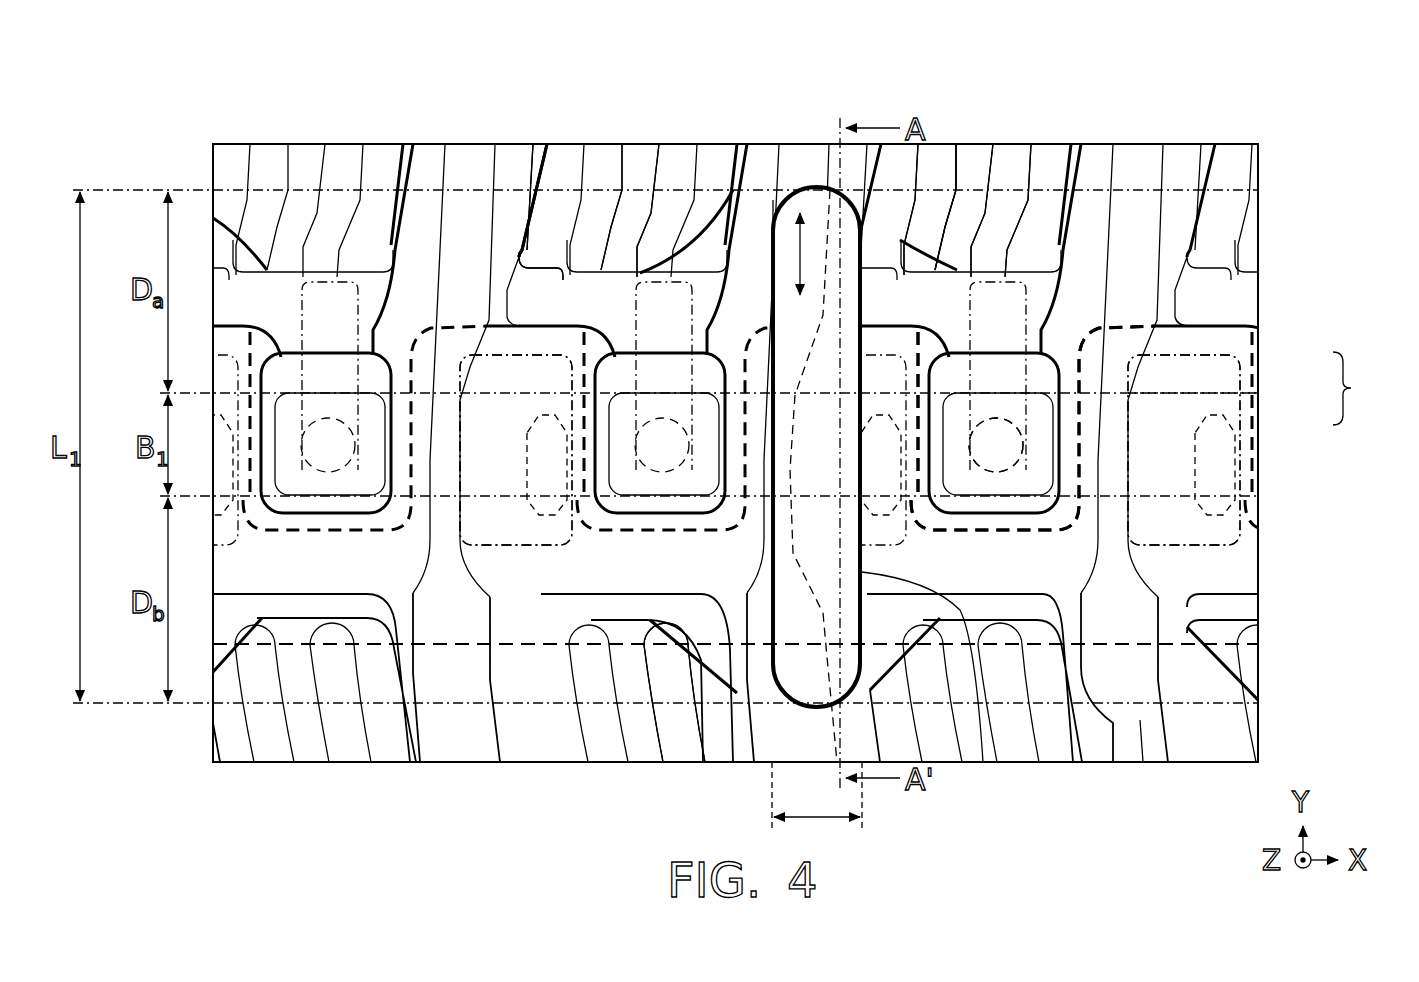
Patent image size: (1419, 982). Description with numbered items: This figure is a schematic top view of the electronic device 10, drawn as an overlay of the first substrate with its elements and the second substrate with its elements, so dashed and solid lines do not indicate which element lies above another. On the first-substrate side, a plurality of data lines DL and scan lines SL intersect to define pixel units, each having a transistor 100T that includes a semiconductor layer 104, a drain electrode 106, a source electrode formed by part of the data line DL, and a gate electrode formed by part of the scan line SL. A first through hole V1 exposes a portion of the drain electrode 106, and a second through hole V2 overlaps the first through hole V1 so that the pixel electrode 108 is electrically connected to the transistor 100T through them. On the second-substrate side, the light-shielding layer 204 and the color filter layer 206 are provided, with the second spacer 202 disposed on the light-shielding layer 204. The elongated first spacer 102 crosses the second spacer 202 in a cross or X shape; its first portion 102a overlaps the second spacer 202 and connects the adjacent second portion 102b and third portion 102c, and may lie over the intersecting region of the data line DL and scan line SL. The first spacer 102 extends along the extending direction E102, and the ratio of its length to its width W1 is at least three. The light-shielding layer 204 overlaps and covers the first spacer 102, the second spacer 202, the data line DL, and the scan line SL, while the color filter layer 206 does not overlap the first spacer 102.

The electronic device 10 is at (101, 64).
The first spacer 102 is at (827, 170).
The first portion 102a is at (970, 168).
The second portion 102b is at (815, 200).
The third portion 102c is at (978, 762).
The semiconductor layer 104 is at (1240, 372).
The drain electrode 106 is at (1240, 414).
The pixel electrode 108 is at (1048, 167).
The transistor 100T is at (1376, 388).
The second spacer 202 is at (1045, 468).
The light-shielding layer 204 is at (520, 165).
The color filter layer 206 is at (640, 165).
The first through hole V1 is at (1023, 437).
The second through hole V2 is at (1100, 305).
The scan line SL is at (1225, 650).
The data line DL is at (1143, 760).
The extending direction E102 is at (765, 165).
The width W1 is at (817, 796).